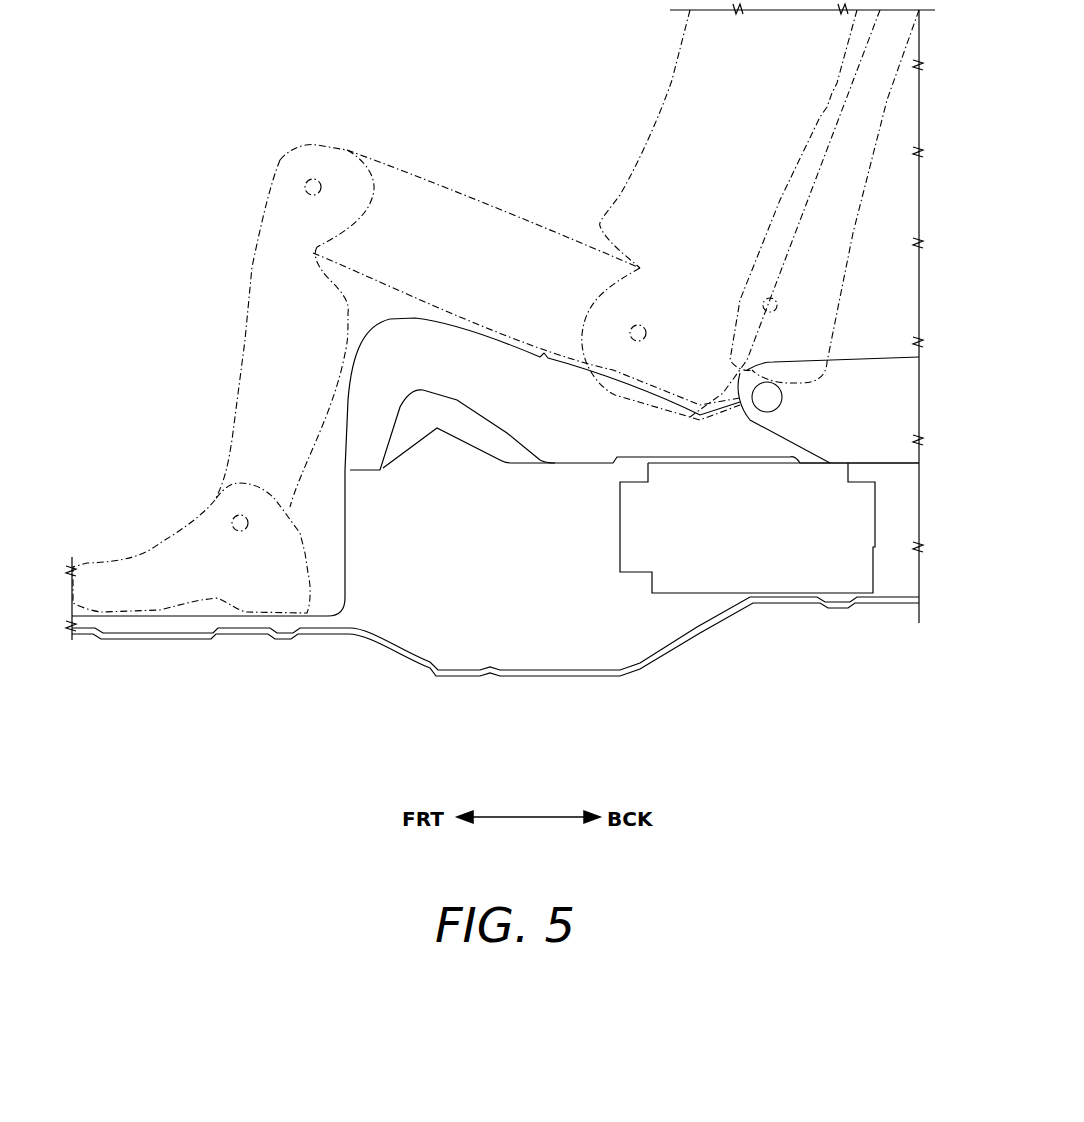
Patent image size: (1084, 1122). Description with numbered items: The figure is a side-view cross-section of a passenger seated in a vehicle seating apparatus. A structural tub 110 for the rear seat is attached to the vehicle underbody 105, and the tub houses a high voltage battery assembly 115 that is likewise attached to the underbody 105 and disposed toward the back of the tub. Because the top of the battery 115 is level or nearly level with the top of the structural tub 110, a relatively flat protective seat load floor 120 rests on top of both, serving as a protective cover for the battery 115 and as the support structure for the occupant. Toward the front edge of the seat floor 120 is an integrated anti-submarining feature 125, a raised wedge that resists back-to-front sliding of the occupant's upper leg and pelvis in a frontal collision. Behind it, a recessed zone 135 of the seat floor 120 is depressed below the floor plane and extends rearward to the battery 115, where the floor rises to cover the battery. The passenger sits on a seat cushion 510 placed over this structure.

The underbody 105 is at (695, 633).
The structural tub 110 is at (343, 550).
The high voltage battery assembly 115 is at (748, 540).
The protective seat load floor 120 is at (385, 470).
The anti-submarining feature 125 is at (438, 428).
The recessed zone 135 is at (530, 463).
The seat cushion 510 is at (362, 422).